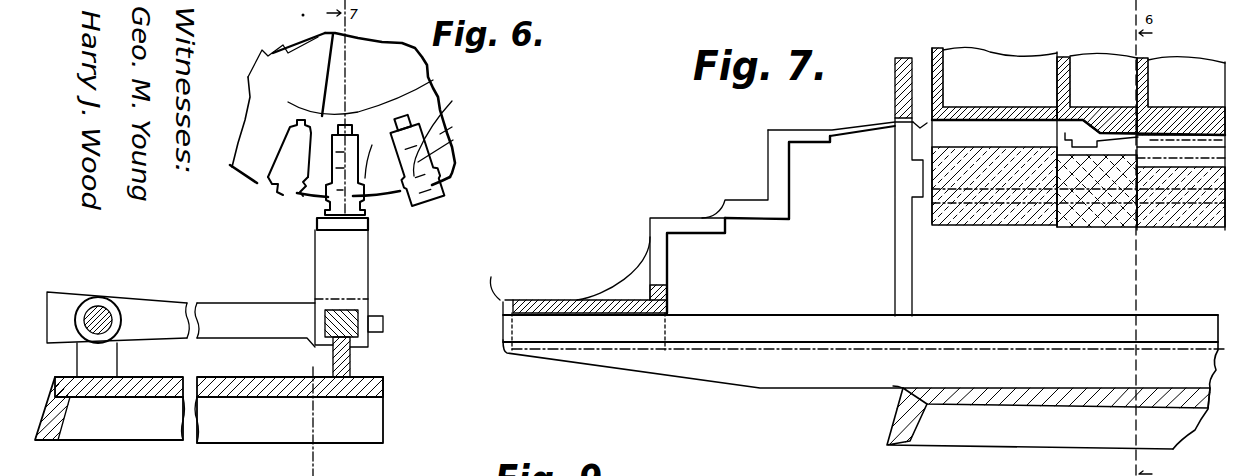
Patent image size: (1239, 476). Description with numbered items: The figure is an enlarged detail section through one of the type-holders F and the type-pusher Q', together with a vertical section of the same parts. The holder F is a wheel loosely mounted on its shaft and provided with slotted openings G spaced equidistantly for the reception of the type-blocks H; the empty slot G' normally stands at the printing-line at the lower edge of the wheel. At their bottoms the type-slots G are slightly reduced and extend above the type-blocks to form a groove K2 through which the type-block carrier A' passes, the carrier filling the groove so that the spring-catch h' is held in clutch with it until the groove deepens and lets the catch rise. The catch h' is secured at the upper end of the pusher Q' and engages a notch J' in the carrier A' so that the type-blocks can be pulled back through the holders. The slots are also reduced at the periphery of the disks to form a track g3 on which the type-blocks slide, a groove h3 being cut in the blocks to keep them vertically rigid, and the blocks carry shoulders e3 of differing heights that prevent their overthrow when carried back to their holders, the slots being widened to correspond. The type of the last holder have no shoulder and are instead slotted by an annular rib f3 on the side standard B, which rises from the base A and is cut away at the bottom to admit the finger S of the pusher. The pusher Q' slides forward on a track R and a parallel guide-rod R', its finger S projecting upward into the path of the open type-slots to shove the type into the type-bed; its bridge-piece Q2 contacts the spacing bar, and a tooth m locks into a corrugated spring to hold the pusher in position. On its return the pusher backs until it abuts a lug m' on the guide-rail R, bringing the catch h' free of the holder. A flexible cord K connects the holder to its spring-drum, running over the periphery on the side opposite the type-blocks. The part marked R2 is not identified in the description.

In FIG. 6, the groove K2 is at (276, 128).
In FIG. 7, the groove K2 is at (997, 130).
In FIG. 6, the holder F is at (447, 181).
In FIG. 6, the slotted opening G is at (355, 170).
In FIG. 6, the empty slot G' is at (289, 175).
In FIG. 7, the empty slot G' is at (1181, 114).
In FIG. 6, the type-block H is at (440, 204).
In FIG. 7, the type-block H is at (1013, 224).
In FIG. 6, the shoulder e3 is at (413, 141).
In FIG. 6, the groove h3 is at (444, 139).
In FIG. 6, the track g3 is at (268, 184).
In FIG. 6, the sliding pusher Q' is at (323, 282).
In FIG. 7, the sliding pusher Q' is at (635, 281).
In FIG. 6, the track R is at (367, 331).
In FIG. 7, the track R is at (864, 382).
In FIG. 6, the tooth m is at (389, 328).
In FIG. 6, the bridge-piece Q2 is at (255, 325).
In FIG. 6, the guide-rod R' is at (118, 320).
In FIG. 6, the base A is at (209, 410).
In FIG. 7, the base A is at (1048, 417).
In FIG. 7, the finger S is at (789, 173).
In FIG. 7, the spring-catch h' is at (914, 289).
In FIG. 7, the side standard B is at (895, 268).
In FIG. 7, the annular rib f3 is at (917, 180).
In FIG. 7, the lug m' is at (488, 287).
In FIG. 7, the notch J' is at (1101, 106).
In FIG. 7, the type-block carrier A' is at (1110, 113).
In FIG. 7, the rod R2 is at (1181, 146).
In FIG. 7, the flexible cord K is at (1088, 160).